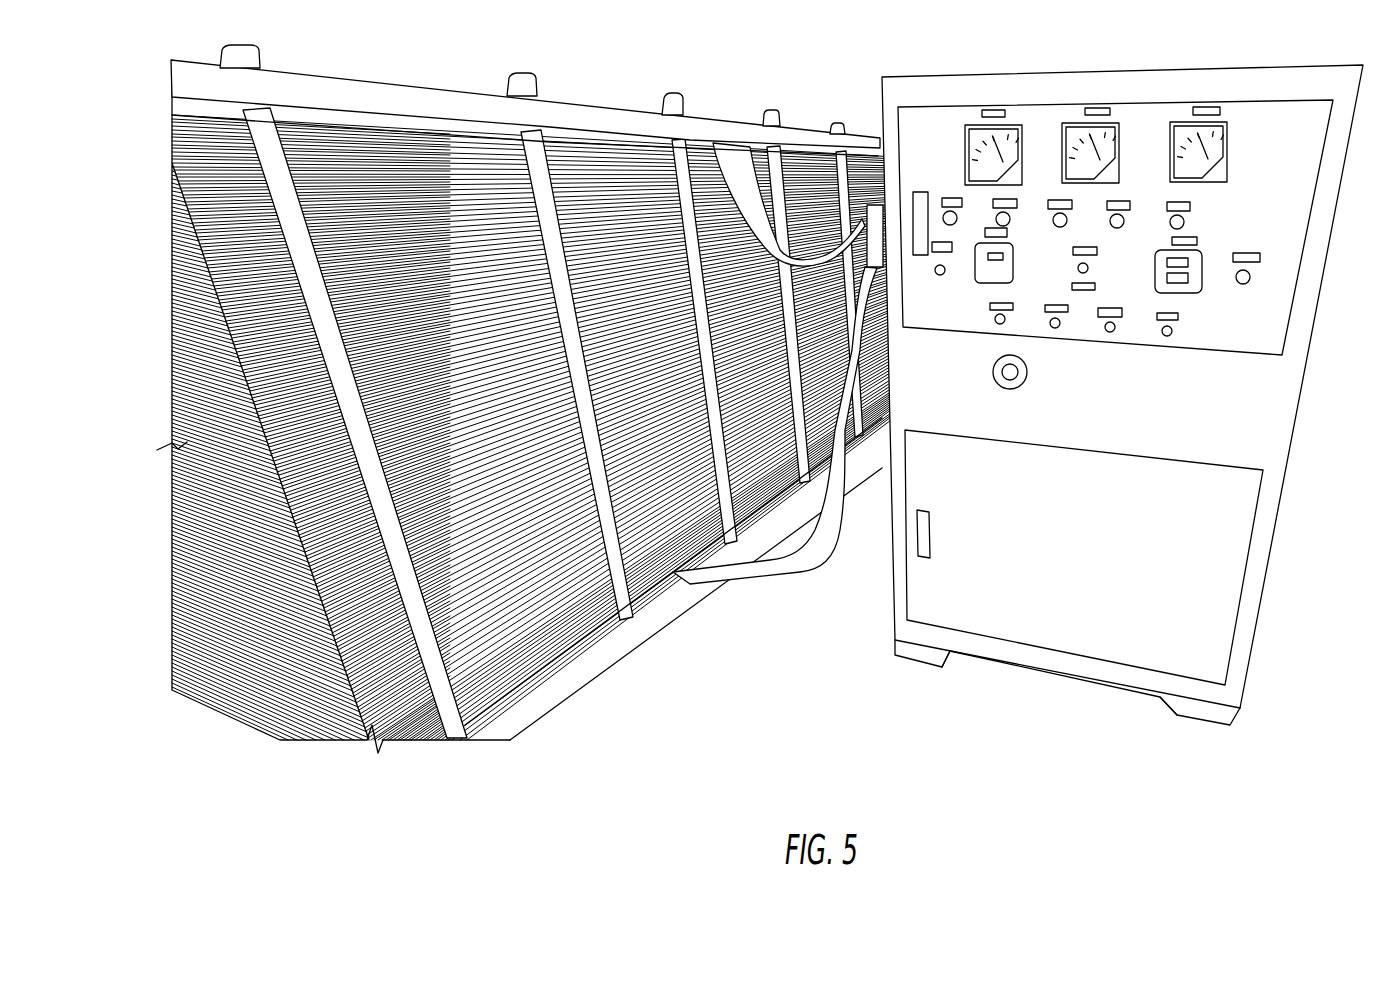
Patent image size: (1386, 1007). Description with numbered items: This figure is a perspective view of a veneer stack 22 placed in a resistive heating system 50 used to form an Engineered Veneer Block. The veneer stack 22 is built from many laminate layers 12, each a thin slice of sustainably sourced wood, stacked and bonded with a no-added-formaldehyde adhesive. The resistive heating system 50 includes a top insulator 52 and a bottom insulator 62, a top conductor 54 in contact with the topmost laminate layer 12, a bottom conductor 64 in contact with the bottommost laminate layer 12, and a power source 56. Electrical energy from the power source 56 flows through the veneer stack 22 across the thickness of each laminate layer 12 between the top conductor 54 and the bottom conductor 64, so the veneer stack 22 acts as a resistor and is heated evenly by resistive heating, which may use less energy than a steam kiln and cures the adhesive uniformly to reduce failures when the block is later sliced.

The laminate layers 12 is at (283, 635).
The veneer stack 22 is at (525, 678).
The resistive heating system 50 is at (990, 788).
The top insulator 52 is at (563, 113).
The top conductor 54 is at (608, 137).
The power source 56 is at (1175, 663).
The bottom insulator 62 is at (647, 618).
The bottom conductor 64 is at (587, 633).